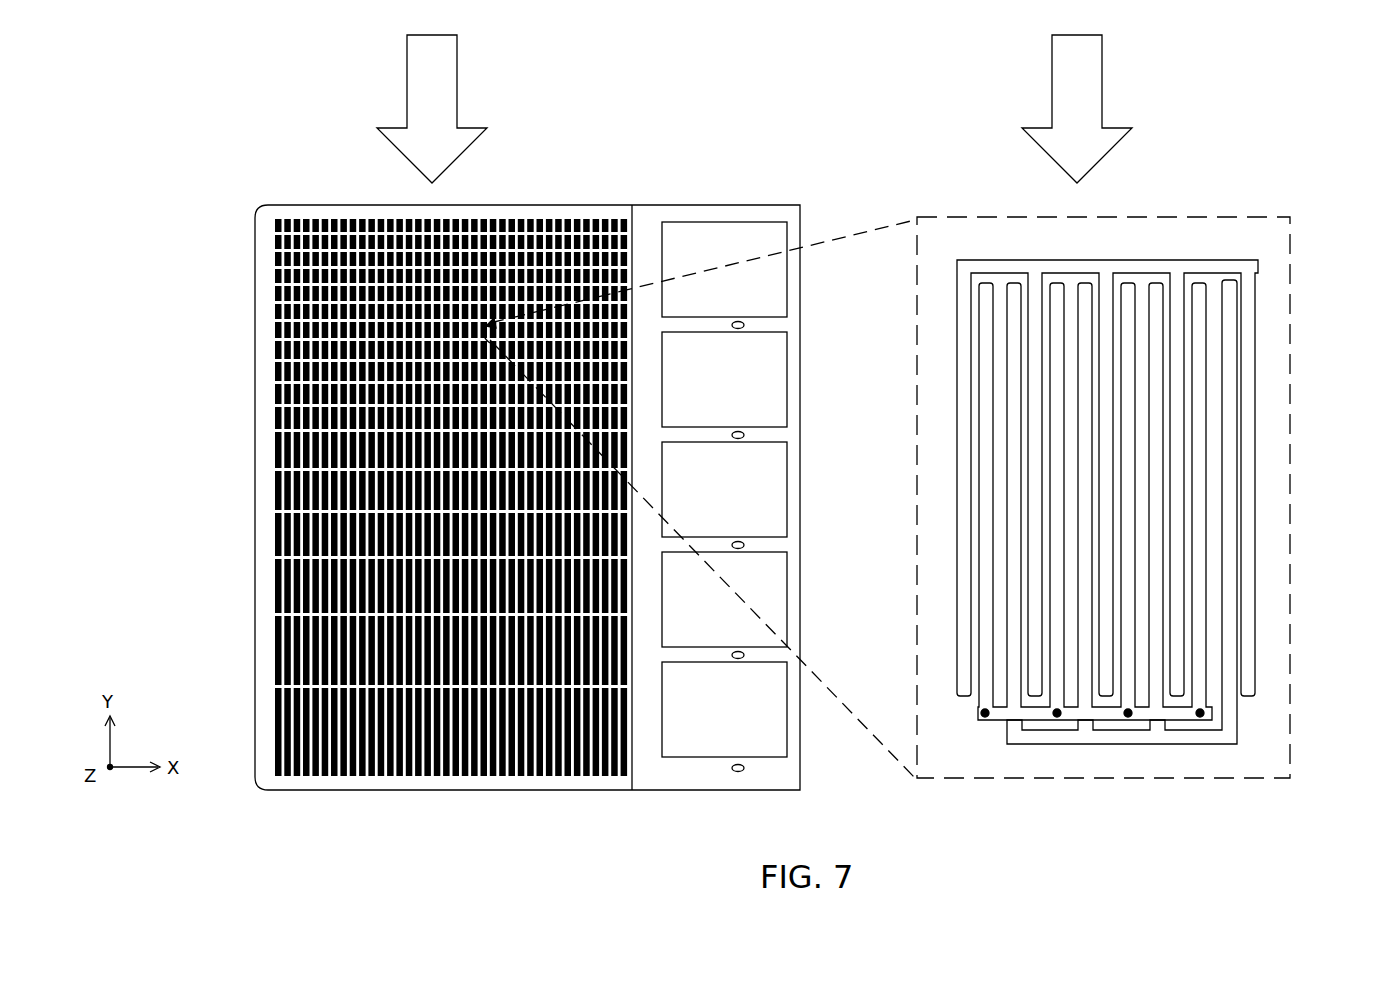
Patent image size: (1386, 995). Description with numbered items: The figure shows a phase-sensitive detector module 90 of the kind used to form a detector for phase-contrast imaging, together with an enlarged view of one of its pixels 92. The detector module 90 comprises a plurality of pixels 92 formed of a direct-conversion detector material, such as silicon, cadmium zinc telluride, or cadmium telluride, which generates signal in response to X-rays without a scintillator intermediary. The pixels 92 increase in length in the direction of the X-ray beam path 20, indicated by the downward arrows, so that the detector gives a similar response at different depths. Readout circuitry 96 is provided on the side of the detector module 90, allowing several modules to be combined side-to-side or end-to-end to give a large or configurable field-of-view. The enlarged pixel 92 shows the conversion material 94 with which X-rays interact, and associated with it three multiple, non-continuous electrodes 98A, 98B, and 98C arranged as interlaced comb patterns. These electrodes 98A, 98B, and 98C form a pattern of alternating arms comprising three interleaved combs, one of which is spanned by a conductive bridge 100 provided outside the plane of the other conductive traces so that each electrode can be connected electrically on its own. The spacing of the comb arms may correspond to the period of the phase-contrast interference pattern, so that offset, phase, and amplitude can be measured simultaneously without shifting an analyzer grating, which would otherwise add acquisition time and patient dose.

The X-ray beam path 20 is at (420, 96).
The detector module 90 is at (247, 183).
The pixel 92 is at (540, 218).
The conversion material 94 is at (1280, 482).
The readout circuitry 96 is at (748, 188).
The electrode 98A is at (1170, 265).
The electrode 98B is at (1225, 690).
The electrode 98C is at (985, 722).
The conductive bridge 100 is at (998, 722).